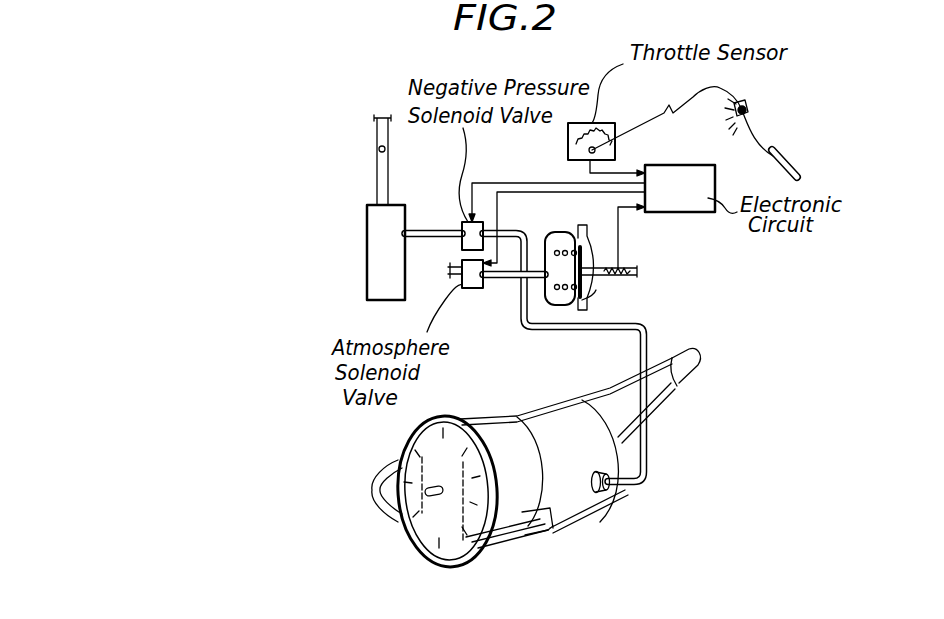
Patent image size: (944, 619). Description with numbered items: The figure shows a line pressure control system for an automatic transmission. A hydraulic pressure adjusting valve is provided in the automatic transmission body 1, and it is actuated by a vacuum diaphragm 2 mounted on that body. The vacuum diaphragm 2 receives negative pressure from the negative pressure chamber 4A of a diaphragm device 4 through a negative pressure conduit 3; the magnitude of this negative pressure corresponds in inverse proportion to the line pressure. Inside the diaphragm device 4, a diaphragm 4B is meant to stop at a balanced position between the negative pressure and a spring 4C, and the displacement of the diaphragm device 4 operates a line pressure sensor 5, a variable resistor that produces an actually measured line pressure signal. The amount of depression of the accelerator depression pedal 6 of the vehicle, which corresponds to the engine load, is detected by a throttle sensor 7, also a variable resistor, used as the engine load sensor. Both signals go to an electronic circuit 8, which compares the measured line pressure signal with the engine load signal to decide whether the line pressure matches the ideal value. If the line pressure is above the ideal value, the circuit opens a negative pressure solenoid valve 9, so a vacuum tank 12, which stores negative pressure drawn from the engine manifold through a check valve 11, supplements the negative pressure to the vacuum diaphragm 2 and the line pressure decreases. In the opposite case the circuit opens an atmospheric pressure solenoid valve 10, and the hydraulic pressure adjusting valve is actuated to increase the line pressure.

The automatic transmission body 1 is at (563, 503).
The vacuum diaphragm 2 is at (602, 496).
The negative pressure conduit 3 is at (647, 452).
The diaphragm device 4 is at (582, 285).
The negative pressure chamber 4A is at (563, 250).
The diaphragm 4B is at (572, 304).
The spring 4C is at (562, 290).
The line pressure sensor 5 is at (620, 267).
The depression pedal 6 is at (786, 153).
The throttle sensor 7 is at (600, 123).
The electronic circuit 8 is at (693, 212).
The negative pressure solenoid valve 9 is at (463, 222).
The atmospheric pressure solenoid valve 10 is at (465, 288).
The check valve 11 is at (378, 149).
The vacuum tank 12 is at (367, 243).